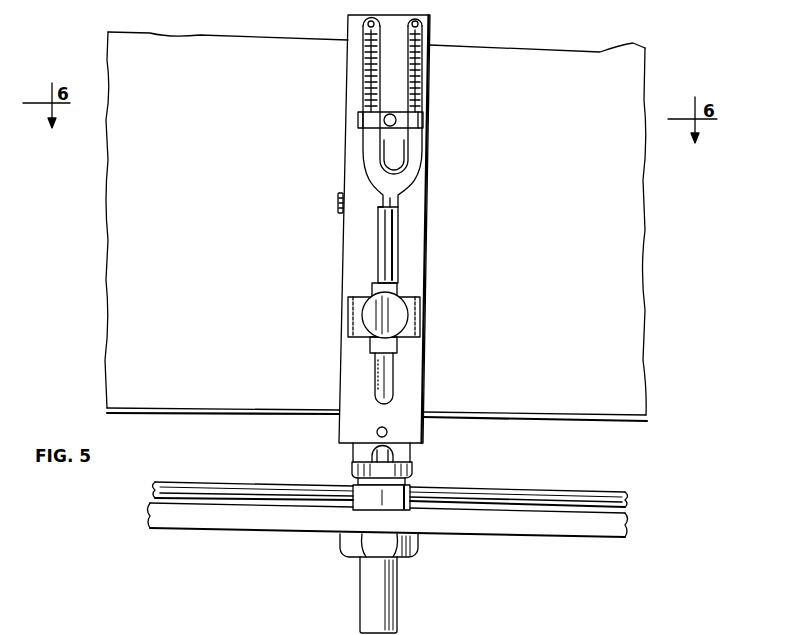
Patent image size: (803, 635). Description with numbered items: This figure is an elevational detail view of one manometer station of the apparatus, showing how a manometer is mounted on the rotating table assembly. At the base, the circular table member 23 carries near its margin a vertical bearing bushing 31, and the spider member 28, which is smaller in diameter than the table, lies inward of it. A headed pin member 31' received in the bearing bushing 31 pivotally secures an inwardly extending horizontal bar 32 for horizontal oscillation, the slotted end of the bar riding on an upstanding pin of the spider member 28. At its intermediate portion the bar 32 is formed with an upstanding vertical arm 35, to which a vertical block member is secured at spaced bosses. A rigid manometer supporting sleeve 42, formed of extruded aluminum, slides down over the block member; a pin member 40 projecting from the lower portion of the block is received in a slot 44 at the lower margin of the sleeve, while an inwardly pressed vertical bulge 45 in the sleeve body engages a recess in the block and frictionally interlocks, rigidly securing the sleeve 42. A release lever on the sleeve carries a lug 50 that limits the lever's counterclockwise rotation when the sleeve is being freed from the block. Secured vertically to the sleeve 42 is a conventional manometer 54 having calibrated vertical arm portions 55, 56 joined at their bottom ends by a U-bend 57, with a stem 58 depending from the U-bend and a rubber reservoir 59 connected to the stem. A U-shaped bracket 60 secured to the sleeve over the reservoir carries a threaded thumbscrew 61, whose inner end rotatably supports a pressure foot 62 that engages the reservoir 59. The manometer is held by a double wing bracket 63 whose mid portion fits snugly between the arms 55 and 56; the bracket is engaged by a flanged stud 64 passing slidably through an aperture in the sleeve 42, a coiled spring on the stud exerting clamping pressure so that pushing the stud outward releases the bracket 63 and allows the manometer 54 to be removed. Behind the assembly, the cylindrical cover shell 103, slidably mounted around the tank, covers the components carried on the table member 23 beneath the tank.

The circular table member 23 is at (570, 528).
The spider member 28 is at (592, 502).
The vertical bearing bushing 31 is at (401, 488).
The headed pin member 31' is at (411, 456).
The horizontal bar 32 is at (352, 468).
The upstanding vertical arm 35 is at (356, 450).
The pin member 40 is at (388, 404).
The manometer supporting sleeve 42 is at (428, 239).
The slot 44 is at (387, 432).
The inwardly pressed vertical bulge 45 is at (383, 389).
The lug 50 is at (338, 207).
The manometer 54 is at (418, 174).
The calibrated vertical arm portion 55 is at (366, 72).
The calibrated vertical arm portion 56 is at (412, 79).
The U-bend 57 is at (394, 155).
The stem 58 is at (397, 199).
The rubber reservoir 59 is at (381, 244).
The U-shaped bracket 60 is at (352, 327).
The thumbscrew 61 is at (391, 312).
The pressure foot 62 is at (373, 285).
The double wing bracket 63 is at (372, 116).
The flanged stud 64 is at (368, 127).
The cylindrical cover shell 103 is at (612, 278).